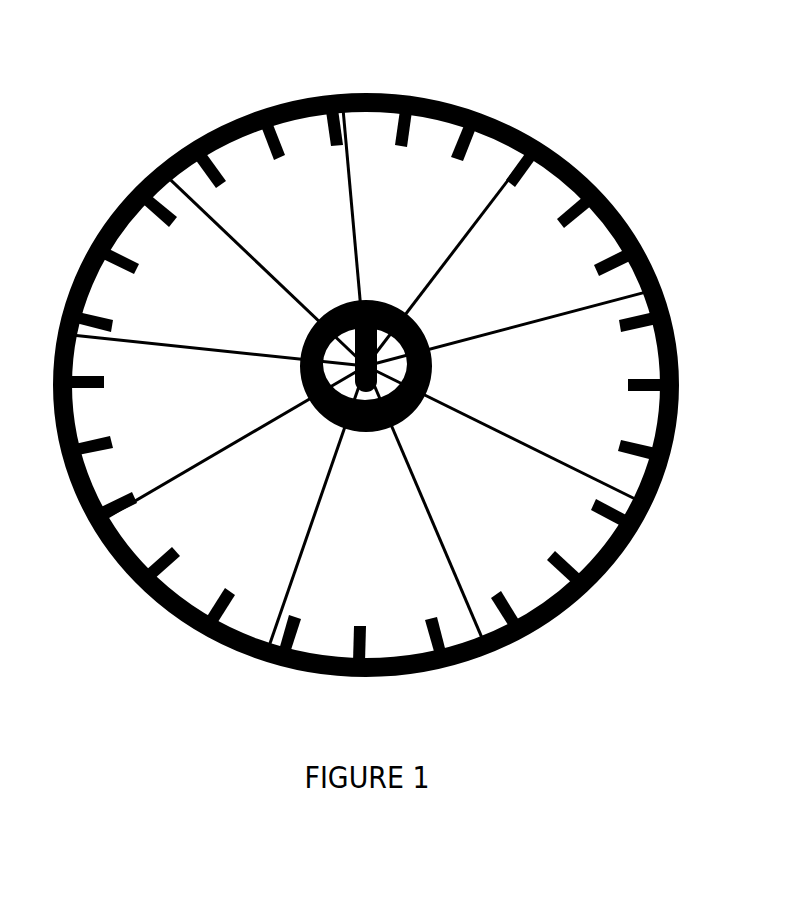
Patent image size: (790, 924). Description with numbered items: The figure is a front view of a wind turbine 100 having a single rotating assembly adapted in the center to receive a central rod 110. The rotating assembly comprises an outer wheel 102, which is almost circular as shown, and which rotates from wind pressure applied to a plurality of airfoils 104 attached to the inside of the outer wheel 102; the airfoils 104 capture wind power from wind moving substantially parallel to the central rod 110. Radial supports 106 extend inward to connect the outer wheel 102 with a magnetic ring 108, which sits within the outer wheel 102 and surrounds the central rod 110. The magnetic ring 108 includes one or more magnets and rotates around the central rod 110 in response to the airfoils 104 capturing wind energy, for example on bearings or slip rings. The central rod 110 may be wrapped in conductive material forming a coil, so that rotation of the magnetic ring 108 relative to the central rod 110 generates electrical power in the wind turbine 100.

The wind turbine 100 is at (378, 39).
The outer wheel 102 is at (588, 170).
The airfoils 104 is at (636, 392).
The radial supports 106 is at (230, 447).
The magnetic ring 108 is at (418, 329).
The central rod 110 is at (362, 340).